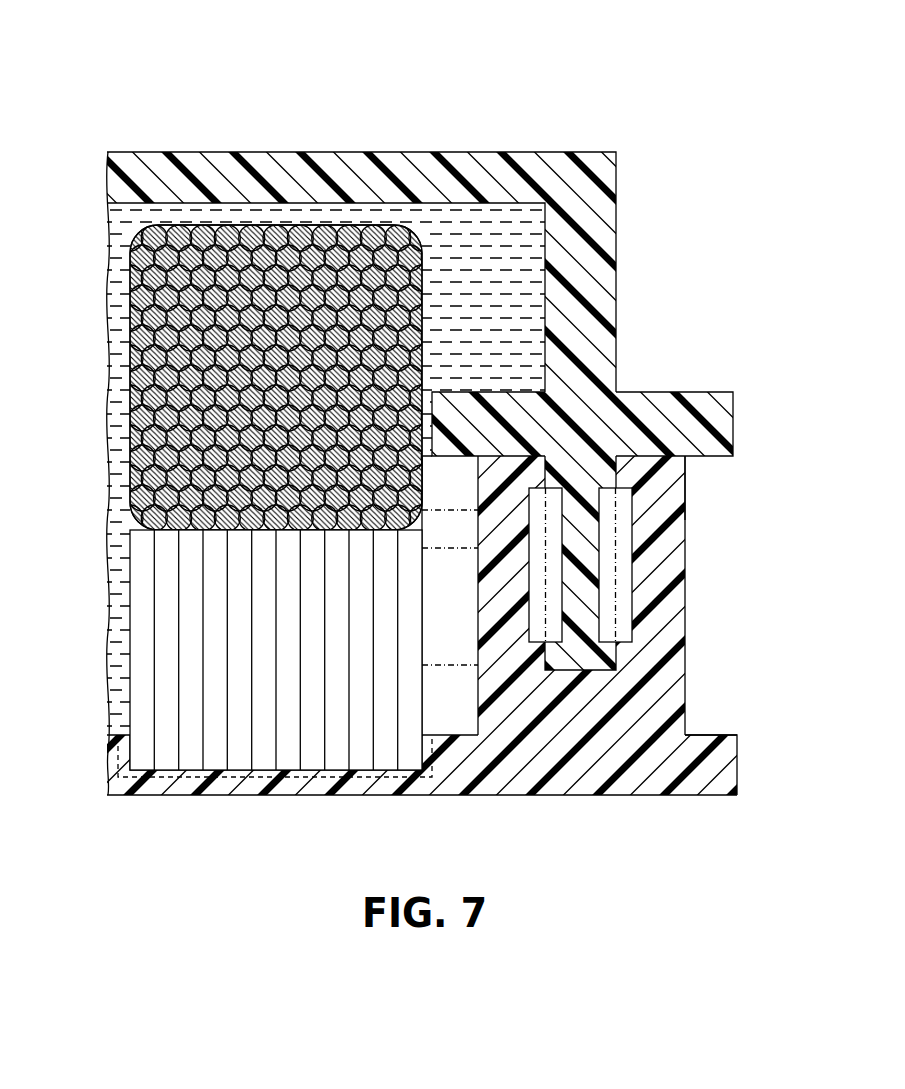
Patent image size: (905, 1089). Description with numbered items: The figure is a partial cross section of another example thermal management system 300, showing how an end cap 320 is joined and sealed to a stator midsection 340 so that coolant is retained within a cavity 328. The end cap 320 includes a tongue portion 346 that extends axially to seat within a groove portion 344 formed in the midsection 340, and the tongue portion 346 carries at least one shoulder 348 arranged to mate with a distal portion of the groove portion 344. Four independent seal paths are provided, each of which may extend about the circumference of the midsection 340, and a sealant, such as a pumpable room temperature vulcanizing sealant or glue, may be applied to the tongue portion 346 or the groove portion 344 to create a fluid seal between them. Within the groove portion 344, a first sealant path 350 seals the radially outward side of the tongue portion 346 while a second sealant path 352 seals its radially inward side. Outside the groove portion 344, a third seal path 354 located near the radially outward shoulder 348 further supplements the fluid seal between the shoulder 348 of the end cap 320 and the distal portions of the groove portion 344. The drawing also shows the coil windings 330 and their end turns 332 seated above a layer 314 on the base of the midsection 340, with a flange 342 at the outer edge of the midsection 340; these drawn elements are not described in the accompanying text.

The thermal management system 300 is at (558, 62).
The insulation layer 314 is at (258, 787).
The end cap 320 is at (580, 187).
The cavity 328 is at (498, 313).
The winding 330 is at (192, 622).
The winding end turns 332 is at (134, 268).
The midsection 340 is at (595, 748).
The base flange 342 is at (720, 762).
The groove portion 344 is at (658, 582).
The tongue portion 346 is at (588, 670).
The shoulder 348 is at (690, 392).
The first sealant path 350 is at (635, 567).
The second sealant path 352 is at (563, 578).
The third seal path 354 is at (688, 510).